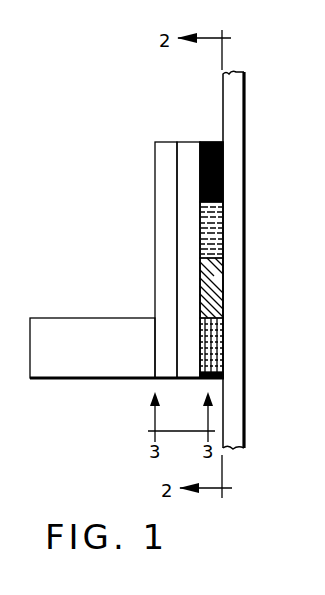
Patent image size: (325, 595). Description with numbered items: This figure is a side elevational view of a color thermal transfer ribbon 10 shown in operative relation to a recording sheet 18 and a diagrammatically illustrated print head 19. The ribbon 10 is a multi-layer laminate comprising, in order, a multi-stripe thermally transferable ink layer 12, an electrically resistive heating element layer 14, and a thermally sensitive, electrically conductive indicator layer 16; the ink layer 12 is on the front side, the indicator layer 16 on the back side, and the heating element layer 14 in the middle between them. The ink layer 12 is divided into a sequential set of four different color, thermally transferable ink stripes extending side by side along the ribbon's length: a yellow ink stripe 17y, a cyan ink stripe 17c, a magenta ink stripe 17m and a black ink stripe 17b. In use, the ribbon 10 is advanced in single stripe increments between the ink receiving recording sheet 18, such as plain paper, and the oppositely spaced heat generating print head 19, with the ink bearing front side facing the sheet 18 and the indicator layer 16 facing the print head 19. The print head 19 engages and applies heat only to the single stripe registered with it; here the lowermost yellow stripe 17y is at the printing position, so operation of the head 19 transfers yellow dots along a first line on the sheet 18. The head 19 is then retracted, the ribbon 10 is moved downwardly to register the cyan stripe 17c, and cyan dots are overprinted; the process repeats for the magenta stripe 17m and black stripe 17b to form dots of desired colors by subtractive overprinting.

The color thermal transfer ribbon 10 is at (137, 262).
The ink layer 12 is at (208, 141).
The electrically resistive heating element layer 14 is at (182, 141).
The indicator layer 16 is at (165, 141).
The black ink stripe 17b is at (223, 172).
The magenta ink stripe 17m is at (217, 233).
The cyan ink stripe 17c is at (217, 293).
The yellow ink stripe 17y is at (217, 348).
The recording sheet 18 is at (236, 102).
The print head 19 is at (134, 326).